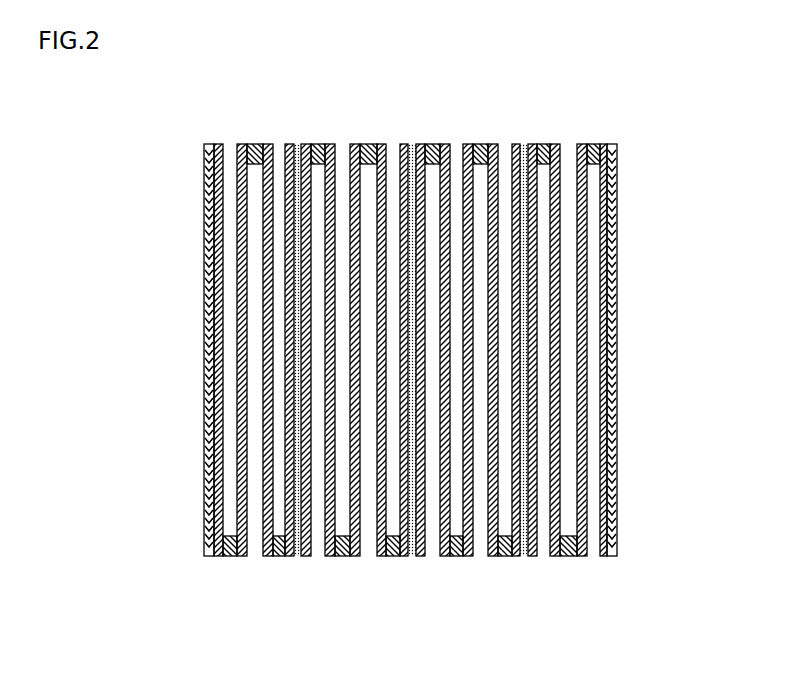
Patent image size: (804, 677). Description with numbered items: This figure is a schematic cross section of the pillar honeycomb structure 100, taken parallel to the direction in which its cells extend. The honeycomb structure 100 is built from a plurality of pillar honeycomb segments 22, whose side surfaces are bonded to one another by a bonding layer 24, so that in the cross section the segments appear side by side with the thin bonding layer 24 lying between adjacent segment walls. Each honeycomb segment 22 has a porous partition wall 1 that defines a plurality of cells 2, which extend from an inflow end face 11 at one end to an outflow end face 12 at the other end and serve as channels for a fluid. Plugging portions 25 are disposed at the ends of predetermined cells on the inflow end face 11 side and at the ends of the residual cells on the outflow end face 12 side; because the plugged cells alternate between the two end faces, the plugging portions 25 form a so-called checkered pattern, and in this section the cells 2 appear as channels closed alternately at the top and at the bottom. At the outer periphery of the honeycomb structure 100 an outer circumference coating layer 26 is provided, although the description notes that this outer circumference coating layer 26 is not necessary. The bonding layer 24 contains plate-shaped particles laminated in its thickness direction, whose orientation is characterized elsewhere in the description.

The honeycomb structure 100 is at (728, 85).
The partition wall 1 is at (288, 145).
The cells 2 is at (341, 168).
The inflow end face 11 is at (217, 145).
The outflow end face 12 is at (464, 557).
The honeycomb segment 22 is at (262, 132).
The bonding layer 24 is at (411, 144).
The plugging portions 25 is at (480, 144).
The outer circumference coating layer 26 is at (617, 188).